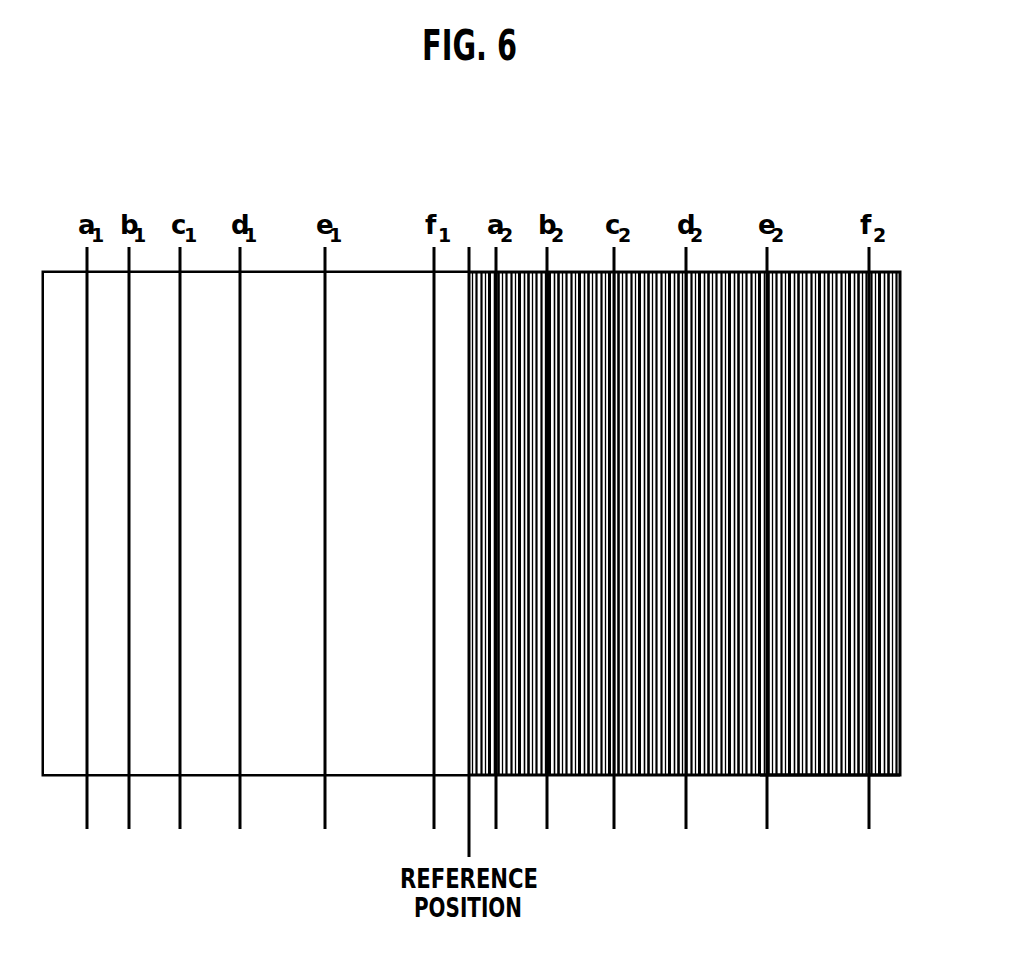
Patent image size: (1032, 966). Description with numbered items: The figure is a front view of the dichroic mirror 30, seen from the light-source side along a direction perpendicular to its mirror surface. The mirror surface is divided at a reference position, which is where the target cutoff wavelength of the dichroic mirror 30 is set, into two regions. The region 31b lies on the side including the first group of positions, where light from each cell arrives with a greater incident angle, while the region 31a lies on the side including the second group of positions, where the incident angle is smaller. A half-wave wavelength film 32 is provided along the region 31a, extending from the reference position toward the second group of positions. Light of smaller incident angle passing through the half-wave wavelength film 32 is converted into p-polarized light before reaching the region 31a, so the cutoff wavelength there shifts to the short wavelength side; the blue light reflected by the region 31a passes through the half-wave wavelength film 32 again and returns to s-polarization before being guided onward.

The dichroic mirror 30 is at (776, 170).
The region 31a is at (684, 524).
The region 31b is at (256, 523).
The λ/2 wavelength film 32 is at (797, 778).